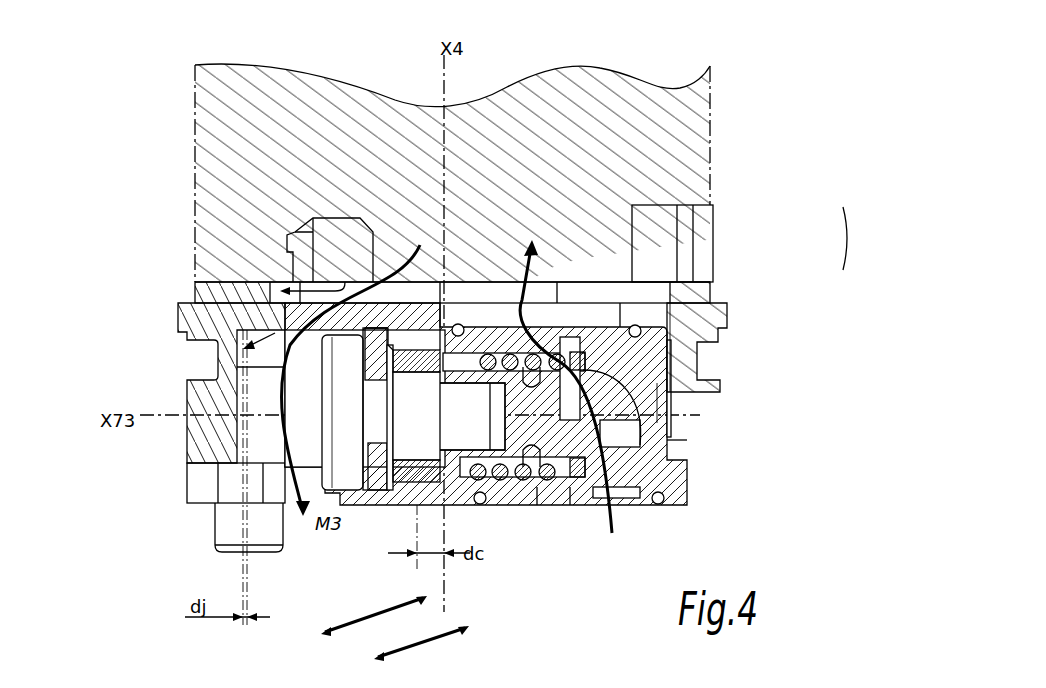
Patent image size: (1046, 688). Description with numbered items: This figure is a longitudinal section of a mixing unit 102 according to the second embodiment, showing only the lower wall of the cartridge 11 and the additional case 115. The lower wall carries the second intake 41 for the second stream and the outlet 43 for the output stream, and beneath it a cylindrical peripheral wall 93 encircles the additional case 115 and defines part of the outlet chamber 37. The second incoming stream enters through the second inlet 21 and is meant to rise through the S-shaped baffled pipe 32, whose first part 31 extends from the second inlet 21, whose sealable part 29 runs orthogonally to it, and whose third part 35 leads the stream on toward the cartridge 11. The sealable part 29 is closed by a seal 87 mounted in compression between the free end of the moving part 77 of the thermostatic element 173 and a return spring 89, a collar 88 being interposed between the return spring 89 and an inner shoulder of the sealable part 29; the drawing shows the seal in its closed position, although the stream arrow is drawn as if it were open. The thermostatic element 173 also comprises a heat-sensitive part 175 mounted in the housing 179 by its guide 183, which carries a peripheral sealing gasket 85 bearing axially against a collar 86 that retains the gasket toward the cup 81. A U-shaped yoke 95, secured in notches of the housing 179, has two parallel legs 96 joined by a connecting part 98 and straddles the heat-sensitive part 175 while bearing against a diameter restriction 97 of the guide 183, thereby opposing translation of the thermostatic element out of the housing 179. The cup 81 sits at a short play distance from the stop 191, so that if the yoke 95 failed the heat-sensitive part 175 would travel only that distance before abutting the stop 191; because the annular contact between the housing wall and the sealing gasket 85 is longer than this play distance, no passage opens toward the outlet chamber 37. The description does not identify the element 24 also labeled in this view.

The cartridge 11 is at (712, 119).
The mixing unit 102 is at (178, 200).
The peripheral wall 93 is at (283, 300).
The outlet chamber 37 is at (268, 350).
The outlet 43 is at (337, 283).
The diameter restriction 97 is at (366, 328).
The U-shaped yoke 95 is at (388, 340).
The connecting part 98 is at (438, 300).
The collar 86 is at (460, 300).
The second intake 41 is at (498, 300).
The housing 179 is at (510, 300).
The legs 96 is at (373, 457).
The guide 183 is at (388, 490).
The moving part 77 is at (437, 483).
The sealing gasket 85 is at (445, 482).
The seal 87 is at (495, 480).
The housing 24 is at (517, 507).
The return spring 89 is at (537, 507).
The collar 88 is at (570, 507).
The second inlet 21 is at (603, 500).
The third part 35 is at (530, 282).
The sealable part 29 is at (668, 388).
The first part 31 is at (667, 443).
The baffled pipe 32 is at (861, 238).
The additional case 115 is at (660, 418).
The heat-sensitive part 175 is at (374, 622).
The thermostatic element 173 is at (421, 650).
The cup 81 is at (237, 442).
The stop 191 is at (287, 500).